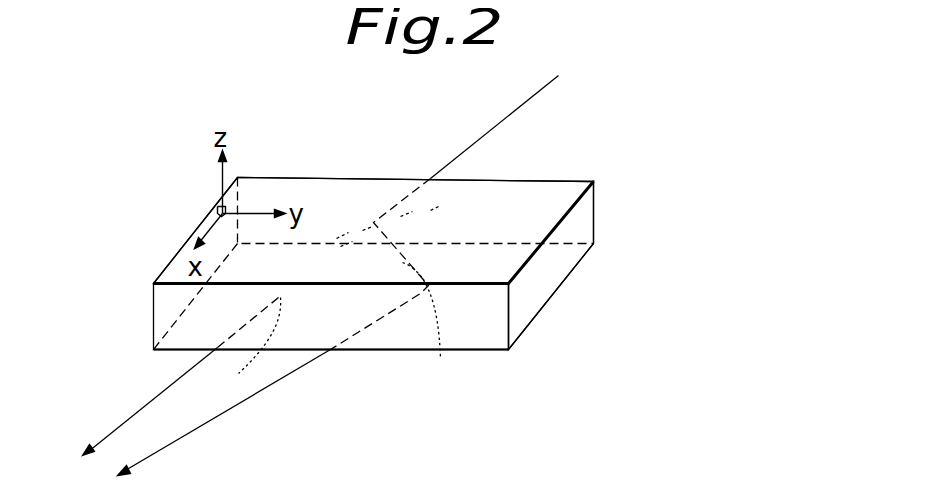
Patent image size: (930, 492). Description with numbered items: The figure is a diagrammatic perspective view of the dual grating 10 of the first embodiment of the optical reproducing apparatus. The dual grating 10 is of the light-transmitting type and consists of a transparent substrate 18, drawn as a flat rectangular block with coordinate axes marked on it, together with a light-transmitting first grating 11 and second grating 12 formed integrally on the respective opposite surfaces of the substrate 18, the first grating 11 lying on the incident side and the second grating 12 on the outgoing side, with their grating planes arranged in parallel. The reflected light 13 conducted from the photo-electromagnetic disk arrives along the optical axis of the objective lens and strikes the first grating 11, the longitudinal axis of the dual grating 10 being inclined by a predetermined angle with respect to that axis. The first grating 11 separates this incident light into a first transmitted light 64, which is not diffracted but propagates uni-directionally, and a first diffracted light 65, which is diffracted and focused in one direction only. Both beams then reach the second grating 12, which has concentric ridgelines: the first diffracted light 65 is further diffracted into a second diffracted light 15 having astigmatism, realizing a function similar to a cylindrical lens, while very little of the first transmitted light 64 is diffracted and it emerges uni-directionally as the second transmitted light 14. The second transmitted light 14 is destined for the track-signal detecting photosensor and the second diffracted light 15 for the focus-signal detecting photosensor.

The dual grating 10 is at (585, 222).
The first grating 11 is at (543, 200).
The second grating 12 is at (548, 260).
The reflected light 13 is at (508, 113).
The second transmitted light 14 is at (133, 411).
The second diffracted light 15 is at (302, 364).
The substrate 18 is at (519, 286).
The first transmitted light 64 is at (244, 349).
The first diffracted light 65 is at (437, 330).